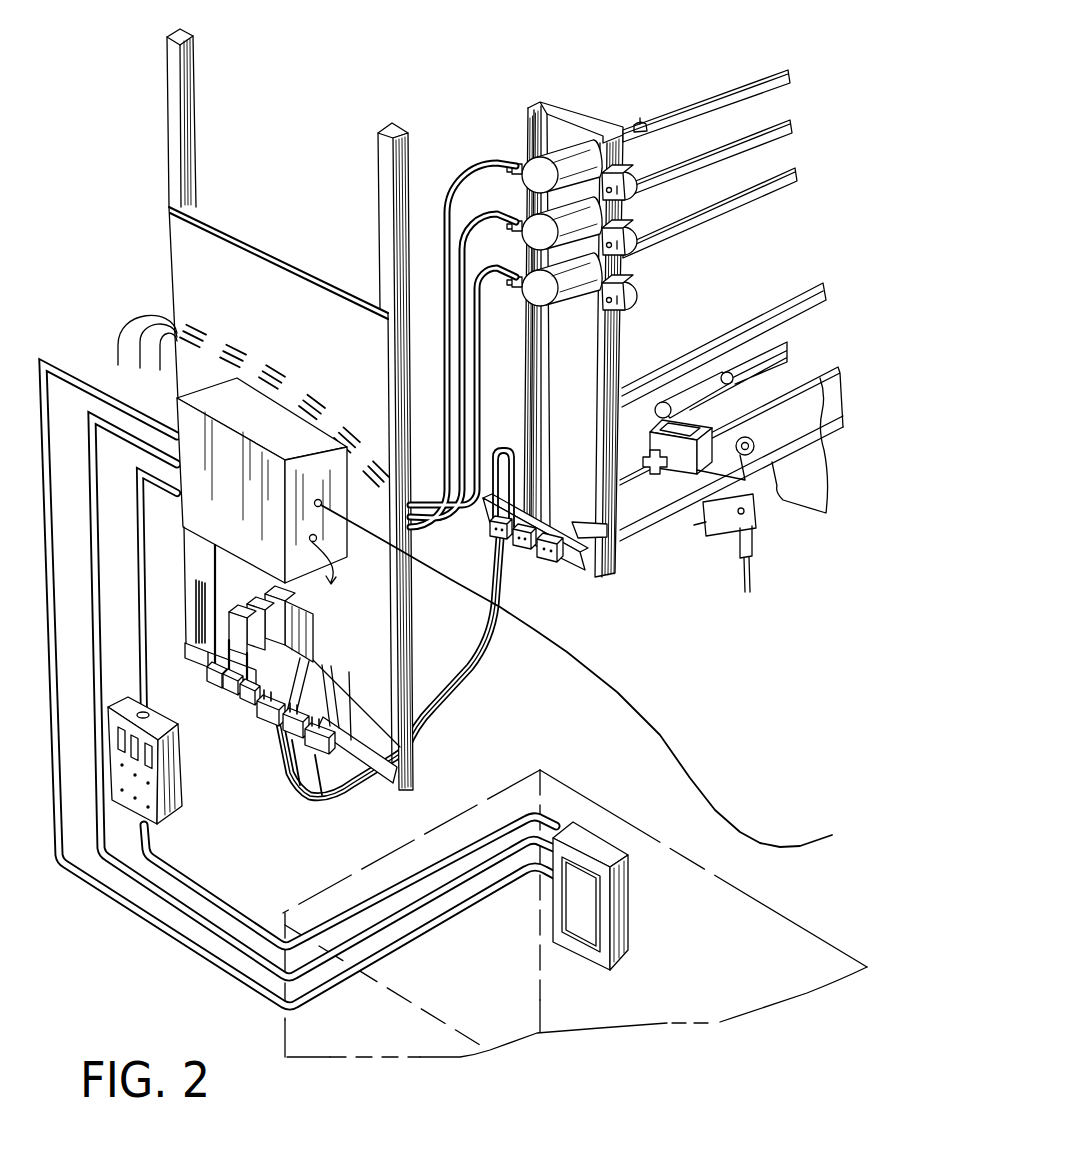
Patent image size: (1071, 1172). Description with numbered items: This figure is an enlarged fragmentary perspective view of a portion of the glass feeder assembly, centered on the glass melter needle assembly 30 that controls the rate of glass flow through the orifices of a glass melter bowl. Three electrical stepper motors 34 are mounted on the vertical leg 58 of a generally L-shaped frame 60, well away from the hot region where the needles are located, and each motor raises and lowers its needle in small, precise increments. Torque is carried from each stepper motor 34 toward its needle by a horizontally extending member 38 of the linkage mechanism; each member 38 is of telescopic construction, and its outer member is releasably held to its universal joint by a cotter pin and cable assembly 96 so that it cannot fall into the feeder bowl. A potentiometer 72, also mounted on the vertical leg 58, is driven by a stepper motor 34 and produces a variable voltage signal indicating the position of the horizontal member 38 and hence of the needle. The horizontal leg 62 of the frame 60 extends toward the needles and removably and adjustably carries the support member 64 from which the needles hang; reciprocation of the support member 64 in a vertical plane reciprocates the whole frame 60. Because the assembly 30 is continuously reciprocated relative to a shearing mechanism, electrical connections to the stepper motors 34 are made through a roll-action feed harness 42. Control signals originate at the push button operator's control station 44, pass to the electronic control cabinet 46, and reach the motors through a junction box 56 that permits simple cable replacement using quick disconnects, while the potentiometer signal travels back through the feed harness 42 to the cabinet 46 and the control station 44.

The glass melter needle assembly 30 is at (578, 92).
The stepper motor 34 is at (533, 180).
The horizontally extending member 38 is at (747, 187).
The roll-action feed harness 42 is at (457, 512).
The operator's control station 44 is at (183, 776).
The electronic control cabinet 46 is at (177, 403).
The junction box 56 is at (312, 657).
The vertical leg 58 is at (620, 362).
The L-shaped frame 60 is at (607, 582).
The horizontal leg 62 is at (637, 540).
The support member 64 is at (812, 500).
The potentiometer 72 is at (640, 300).
The cotter pin and cable assembly 96 is at (639, 122).